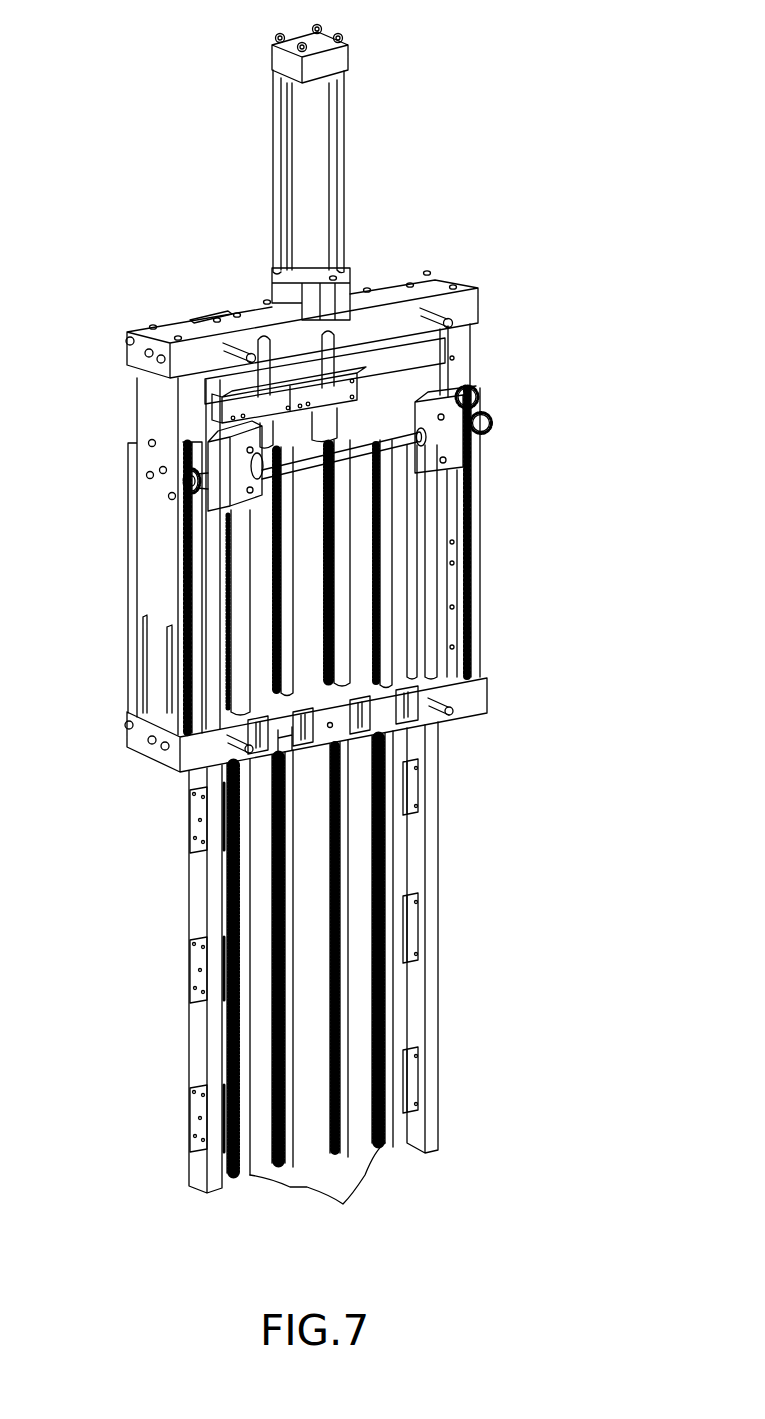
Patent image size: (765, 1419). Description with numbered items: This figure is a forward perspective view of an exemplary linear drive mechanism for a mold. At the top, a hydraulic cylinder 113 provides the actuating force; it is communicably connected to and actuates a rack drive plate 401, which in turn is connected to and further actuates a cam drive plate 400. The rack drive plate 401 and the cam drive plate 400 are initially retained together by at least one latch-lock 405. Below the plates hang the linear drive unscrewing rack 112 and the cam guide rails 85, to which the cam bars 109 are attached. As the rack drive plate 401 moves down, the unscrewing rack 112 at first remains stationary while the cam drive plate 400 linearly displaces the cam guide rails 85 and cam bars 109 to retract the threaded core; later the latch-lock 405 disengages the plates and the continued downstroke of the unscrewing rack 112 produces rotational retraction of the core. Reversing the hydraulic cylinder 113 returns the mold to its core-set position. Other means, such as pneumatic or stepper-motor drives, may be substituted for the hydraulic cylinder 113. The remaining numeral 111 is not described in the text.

The hydraulic cylinder 113 is at (322, 147).
The top plate 111 is at (472, 350).
The cam drive plate 400 is at (430, 376).
The latch-lock 405 is at (343, 387).
The rack drive plate 401 is at (490, 431).
The cam guide rails 85 is at (213, 885).
The cam bars 109 is at (223, 802).
The linear drive unscrewing rack 112 is at (310, 986).